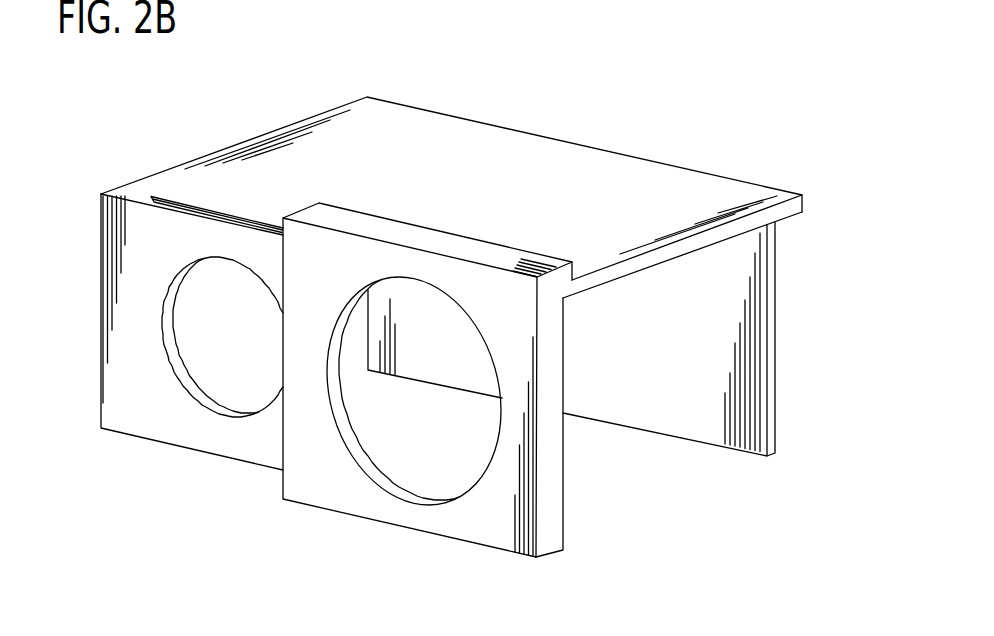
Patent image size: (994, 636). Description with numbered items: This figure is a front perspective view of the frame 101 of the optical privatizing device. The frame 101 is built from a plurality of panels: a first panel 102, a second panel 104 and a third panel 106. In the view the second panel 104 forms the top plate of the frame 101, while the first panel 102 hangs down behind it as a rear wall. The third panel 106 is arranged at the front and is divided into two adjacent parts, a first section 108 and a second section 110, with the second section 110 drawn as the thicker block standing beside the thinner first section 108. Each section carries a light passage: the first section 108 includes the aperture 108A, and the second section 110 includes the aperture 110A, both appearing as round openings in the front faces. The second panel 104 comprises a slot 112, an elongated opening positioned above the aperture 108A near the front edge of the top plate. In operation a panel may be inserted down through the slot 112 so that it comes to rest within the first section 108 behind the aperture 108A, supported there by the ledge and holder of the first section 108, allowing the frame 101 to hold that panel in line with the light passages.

The frame 101 is at (698, 128).
The first panel 102 is at (670, 356).
The second panel 104 is at (478, 193).
The third panel 106 is at (565, 483).
The first section 108 is at (162, 455).
The aperture 108A is at (172, 347).
The second section 110 is at (392, 537).
The aperture 110A is at (353, 440).
The slot 112 is at (170, 197).